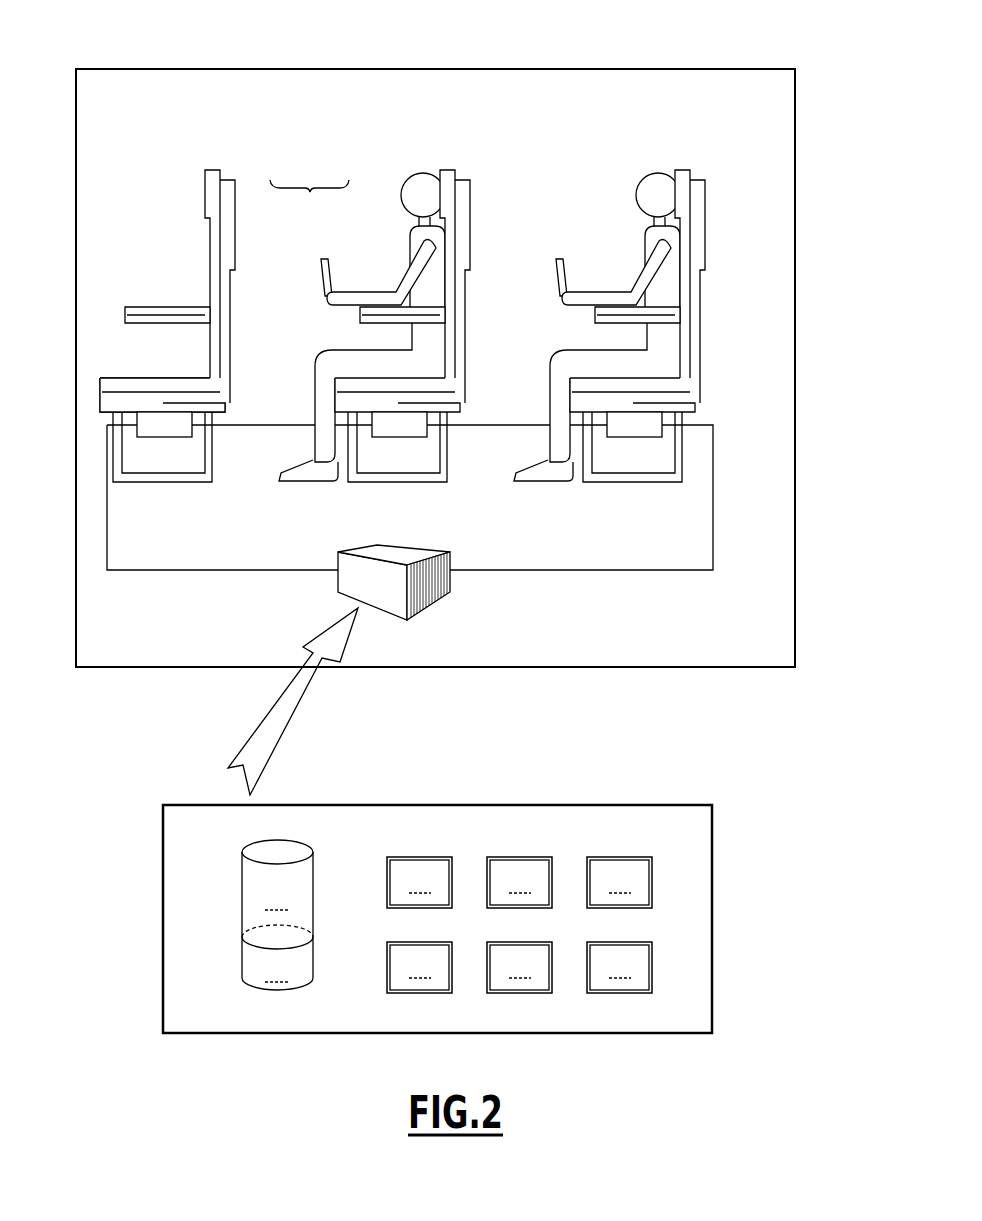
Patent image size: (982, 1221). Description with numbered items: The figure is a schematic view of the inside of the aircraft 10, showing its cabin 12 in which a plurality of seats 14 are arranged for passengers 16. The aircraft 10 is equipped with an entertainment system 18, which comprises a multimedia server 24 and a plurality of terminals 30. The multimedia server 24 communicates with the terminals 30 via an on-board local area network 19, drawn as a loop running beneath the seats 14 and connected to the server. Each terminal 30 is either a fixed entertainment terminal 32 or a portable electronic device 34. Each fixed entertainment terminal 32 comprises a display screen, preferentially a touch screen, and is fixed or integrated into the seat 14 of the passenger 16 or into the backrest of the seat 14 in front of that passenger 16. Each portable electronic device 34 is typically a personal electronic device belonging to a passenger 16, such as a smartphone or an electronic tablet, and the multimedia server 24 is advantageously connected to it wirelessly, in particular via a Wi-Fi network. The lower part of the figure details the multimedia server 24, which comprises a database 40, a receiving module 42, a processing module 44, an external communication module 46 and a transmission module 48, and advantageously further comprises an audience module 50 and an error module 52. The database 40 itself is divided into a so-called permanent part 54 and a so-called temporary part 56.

The aircraft 10 is at (435, 333).
The cabin 12 is at (567, 108).
The seat 14 is at (222, 168).
The passenger 16 is at (418, 315).
The entertainment system 18 is at (548, 386).
The on-board local area network 19 is at (718, 497).
The multimedia server 24 is at (430, 588).
The terminal 30 is at (309, 200).
The fixed entertainment terminal 32 is at (234, 193).
The portable electronic device 34 is at (330, 268).
The database 40 is at (252, 847).
The receiving module 42 is at (419, 882).
The processing module 44 is at (519, 882).
The external communication module 46 is at (619, 882).
The transmission module 48 is at (419, 967).
The audience module 50 is at (519, 967).
The error module 52 is at (619, 967).
The permanent part 54 is at (277, 895).
The temporary part 56 is at (277, 967).